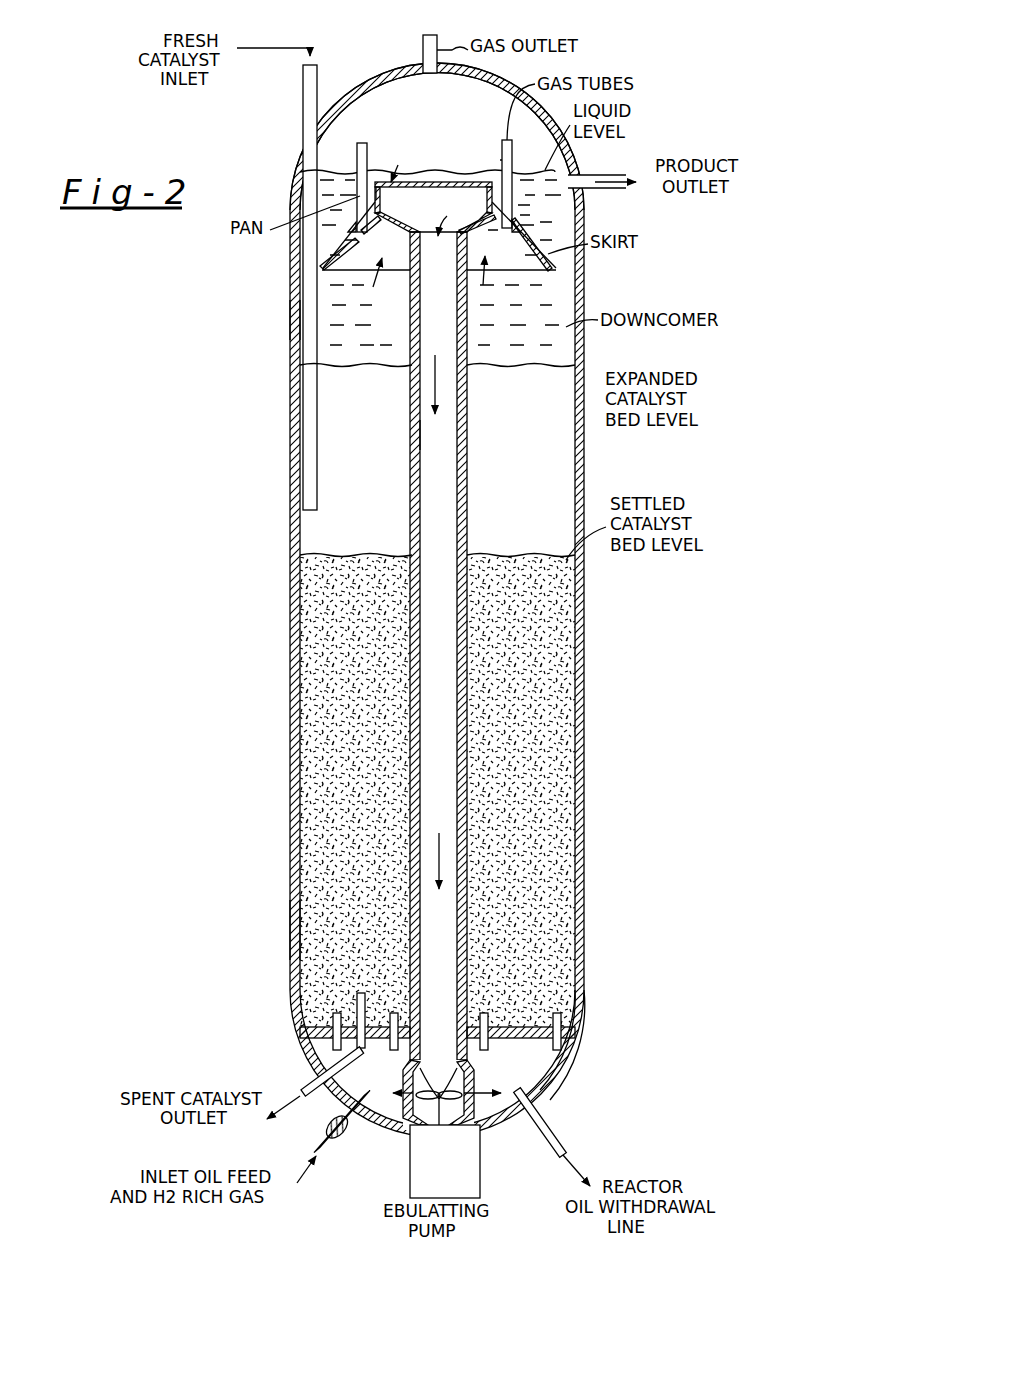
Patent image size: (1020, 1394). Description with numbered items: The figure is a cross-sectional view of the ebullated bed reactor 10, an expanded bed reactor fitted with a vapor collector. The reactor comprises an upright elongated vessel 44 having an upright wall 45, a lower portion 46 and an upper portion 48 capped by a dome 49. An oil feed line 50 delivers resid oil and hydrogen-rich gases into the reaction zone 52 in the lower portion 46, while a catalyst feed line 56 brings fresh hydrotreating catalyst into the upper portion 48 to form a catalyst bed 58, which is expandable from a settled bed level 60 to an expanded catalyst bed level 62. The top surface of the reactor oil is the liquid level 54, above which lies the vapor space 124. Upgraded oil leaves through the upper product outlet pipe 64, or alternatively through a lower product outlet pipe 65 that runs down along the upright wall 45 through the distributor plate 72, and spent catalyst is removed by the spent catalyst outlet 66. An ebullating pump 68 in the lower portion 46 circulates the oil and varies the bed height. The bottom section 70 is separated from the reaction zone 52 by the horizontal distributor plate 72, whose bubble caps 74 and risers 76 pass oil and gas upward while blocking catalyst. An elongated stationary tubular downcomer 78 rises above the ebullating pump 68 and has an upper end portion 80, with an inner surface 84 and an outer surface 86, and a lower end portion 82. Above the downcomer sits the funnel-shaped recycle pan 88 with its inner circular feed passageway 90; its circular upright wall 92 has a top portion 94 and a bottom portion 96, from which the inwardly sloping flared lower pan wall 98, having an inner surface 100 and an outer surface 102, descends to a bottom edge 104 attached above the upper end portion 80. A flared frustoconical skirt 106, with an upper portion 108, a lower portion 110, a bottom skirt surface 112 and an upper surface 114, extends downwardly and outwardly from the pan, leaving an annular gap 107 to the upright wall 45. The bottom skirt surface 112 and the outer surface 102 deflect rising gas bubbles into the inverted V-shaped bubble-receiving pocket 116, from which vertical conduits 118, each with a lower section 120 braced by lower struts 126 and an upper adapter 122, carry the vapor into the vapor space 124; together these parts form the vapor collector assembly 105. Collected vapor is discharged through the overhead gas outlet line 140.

The ebullated bed reactor 10 is at (400, 61).
The overhead gas outlet line 140 is at (437, 40).
The top, roof or dome 49 is at (444, 72).
The catalyst feed line 56 is at (303, 109).
The liquid level 54 is at (357, 170).
The vapor risers or vertical conduits 118 is at (512, 148).
The upper open ended section or adapter 122 is at (501, 157).
The upper product outlet pipe 64 is at (598, 175).
The vapor space 124 is at (456, 142).
The top portion 94 is at (376, 182).
The recycle pan 88 is at (398, 162).
The upright wall 92 is at (391, 200).
The inwardly sloping flared lower pan wall 98 is at (392, 218).
The inner circular feed passageway 90 is at (453, 218).
The inner surface 100 is at (487, 196).
The outer surface 102 is at (479, 232).
The lower section 120 is at (521, 206).
The bottom portion 96 is at (556, 240).
The lower struts 126 is at (332, 238).
The skirt 106 is at (320, 256).
The annular circular passage or gap 107 is at (562, 270).
The upper portion 108 is at (381, 234).
The lower portion 110 is at (346, 255).
The bottom skirt surface 112 is at (492, 243).
The upper surface 114 is at (537, 244).
The bottom edge 104 is at (437, 252).
The vapor collector and assembly 105 is at (385, 302).
The bubble-receiving pocket 116 is at (475, 299).
The upper end portion 80 is at (417, 287).
The upright wall 45 is at (434, 257).
The upper portion 48 is at (293, 320).
The outer surface 86 is at (410, 340).
The inner surface 84 is at (436, 371).
The expanded catalyst bed level 62 is at (575, 368).
The downcomer 78 is at (419, 428).
The reaction zone 52 is at (300, 540).
The settled bed level 60 is at (574, 552).
The catalyst bed 58 is at (300, 666).
The vessel 44 is at (583, 760).
The lower portion 46 is at (292, 950).
The lower end portion 82 is at (440, 885).
The bubble caps 74 is at (582, 1025).
The spent catalyst outlet 66 is at (305, 1080).
The risers 76 is at (572, 1040).
The distributor plate 72 is at (481, 1086).
The bottom section 70 is at (549, 1104).
The lower product outlet pipe 65 is at (553, 1135).
The oil feed line 50 is at (335, 1150).
The ebullating pump 68 is at (481, 1170).